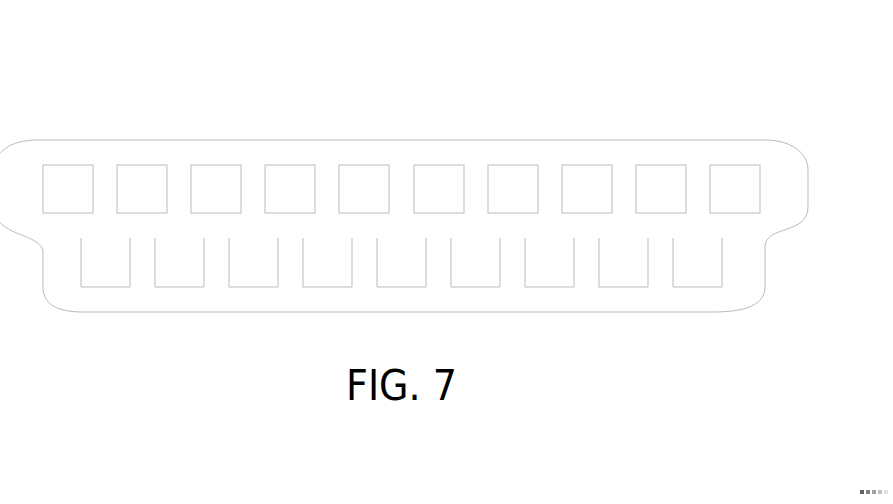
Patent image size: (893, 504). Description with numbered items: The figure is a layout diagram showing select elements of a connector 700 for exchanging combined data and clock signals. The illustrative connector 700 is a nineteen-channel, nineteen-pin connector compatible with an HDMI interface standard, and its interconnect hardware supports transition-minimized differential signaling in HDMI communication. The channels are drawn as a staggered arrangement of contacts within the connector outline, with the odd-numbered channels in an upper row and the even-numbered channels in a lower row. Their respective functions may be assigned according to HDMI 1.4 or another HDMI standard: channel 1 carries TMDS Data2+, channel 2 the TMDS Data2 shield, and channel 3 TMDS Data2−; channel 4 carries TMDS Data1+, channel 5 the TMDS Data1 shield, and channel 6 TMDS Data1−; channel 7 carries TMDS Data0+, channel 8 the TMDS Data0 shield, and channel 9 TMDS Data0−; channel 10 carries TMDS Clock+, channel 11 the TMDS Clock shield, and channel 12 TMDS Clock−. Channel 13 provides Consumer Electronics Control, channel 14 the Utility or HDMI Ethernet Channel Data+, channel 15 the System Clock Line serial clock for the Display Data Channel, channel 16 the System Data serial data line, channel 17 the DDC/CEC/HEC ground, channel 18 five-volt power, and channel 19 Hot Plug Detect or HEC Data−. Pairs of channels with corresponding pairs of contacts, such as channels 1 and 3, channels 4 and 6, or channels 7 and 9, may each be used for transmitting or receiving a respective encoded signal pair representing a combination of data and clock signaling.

The connector 700 is at (404, 164).
The channel 1 is at (68, 189).
The channel 2 is at (105, 262).
The channel 3 is at (142, 189).
The channel 4 is at (179, 262).
The channel 5 is at (216, 189).
The channel 6 is at (253, 262).
The channel 7 is at (290, 189).
The channel 8 is at (327, 262).
The channel 9 is at (364, 189).
The channel 10 is at (401, 262).
The channel 11 is at (439, 189).
The channel 12 is at (475, 262).
The channel 13 is at (513, 189).
The channel 14 is at (549, 262).
The channel 15 is at (587, 189).
The channel 16 is at (623, 262).
The channel 17 is at (661, 189).
The channel 18 is at (697, 262).
The channel 19 is at (735, 189).